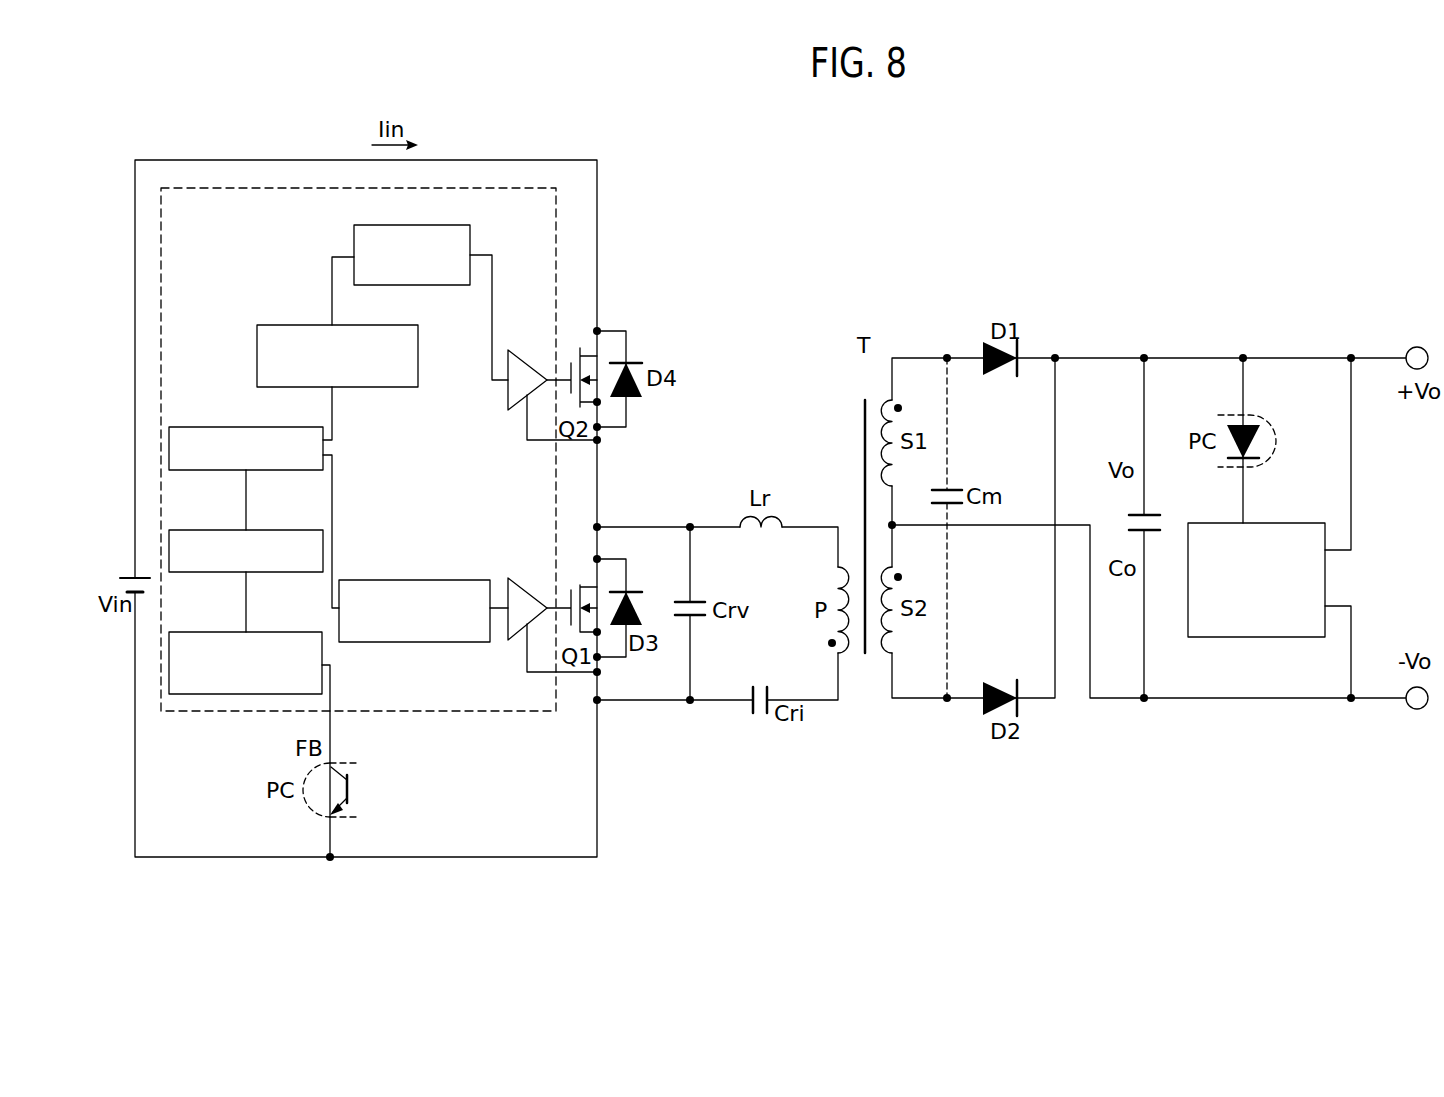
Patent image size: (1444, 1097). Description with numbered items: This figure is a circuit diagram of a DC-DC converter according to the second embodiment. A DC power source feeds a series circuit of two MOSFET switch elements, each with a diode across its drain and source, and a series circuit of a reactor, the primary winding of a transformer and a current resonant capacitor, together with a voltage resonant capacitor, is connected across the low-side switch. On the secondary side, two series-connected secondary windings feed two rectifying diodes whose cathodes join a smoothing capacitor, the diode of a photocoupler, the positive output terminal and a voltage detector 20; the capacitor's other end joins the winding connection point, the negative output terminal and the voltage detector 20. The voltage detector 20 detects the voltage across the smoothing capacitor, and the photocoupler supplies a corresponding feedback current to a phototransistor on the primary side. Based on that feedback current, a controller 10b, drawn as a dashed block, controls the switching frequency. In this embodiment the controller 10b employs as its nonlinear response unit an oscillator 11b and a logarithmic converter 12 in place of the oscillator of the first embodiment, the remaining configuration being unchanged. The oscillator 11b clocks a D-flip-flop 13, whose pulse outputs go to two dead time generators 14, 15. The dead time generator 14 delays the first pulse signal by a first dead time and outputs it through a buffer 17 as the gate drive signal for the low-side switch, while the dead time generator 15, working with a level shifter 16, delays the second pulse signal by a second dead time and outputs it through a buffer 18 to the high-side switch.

The controller 10b is at (480, 713).
The oscillator 11b is at (288, 530).
The logarithmic converter 12 is at (288, 632).
The D-flip-flop 13 is at (200, 427).
The dead time generator 14 is at (419, 578).
The dead time generator 15 is at (257, 348).
The level shifter 16 is at (451, 285).
The buffer 17 is at (527, 580).
The buffer 18 is at (508, 402).
The voltage detector 20 is at (1284, 522).